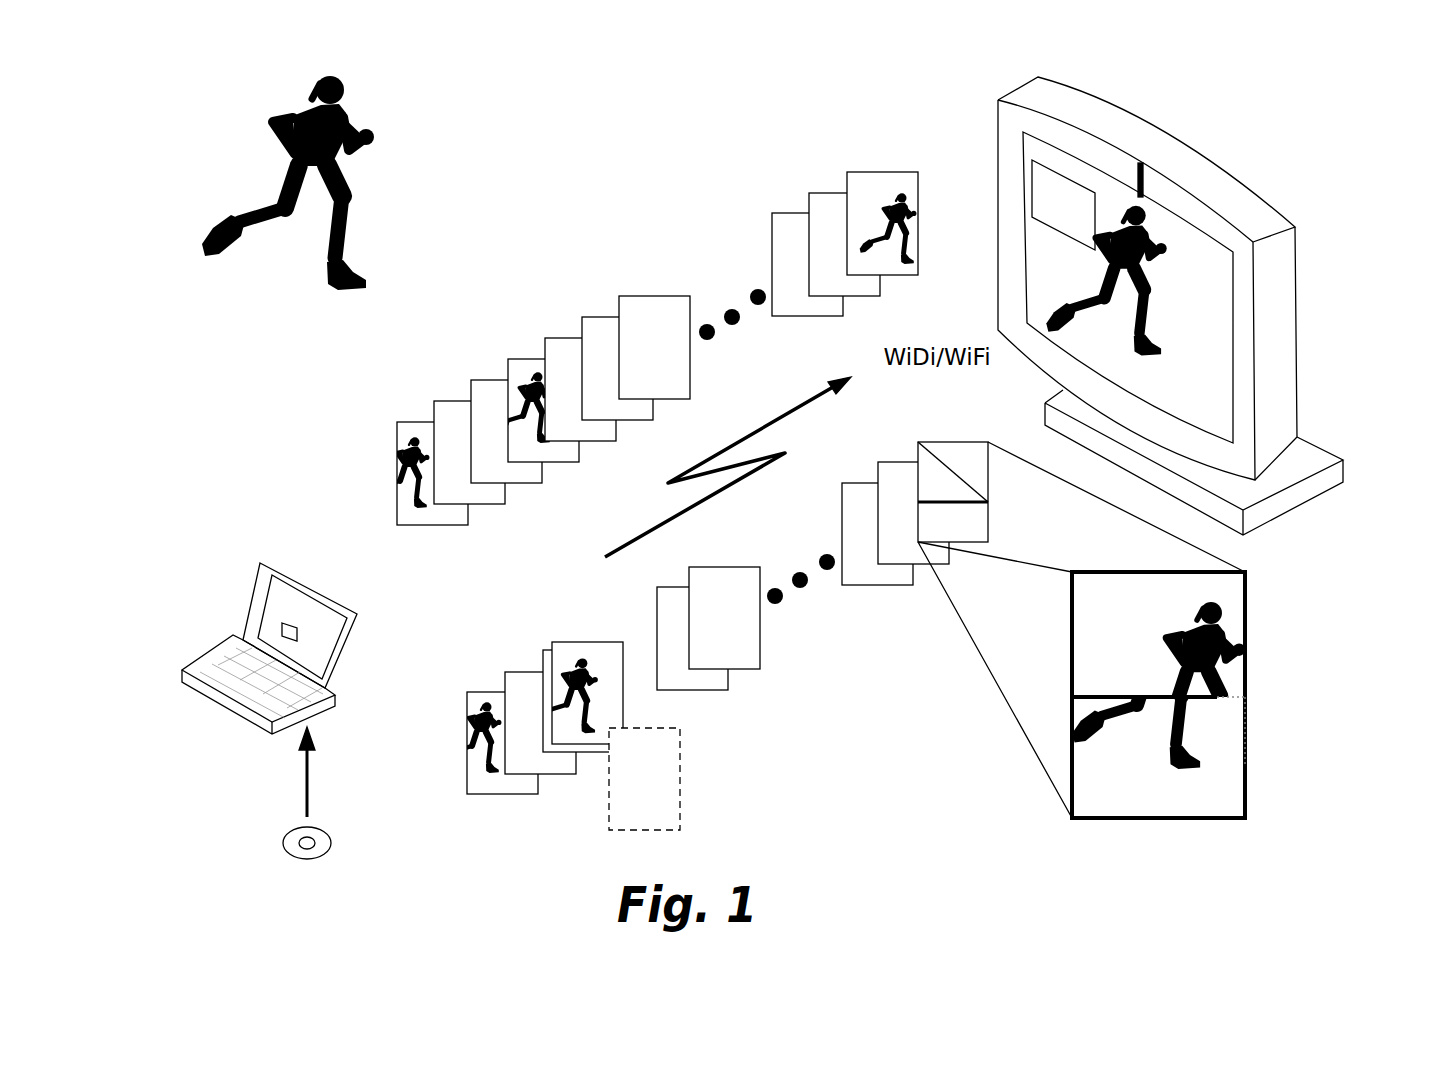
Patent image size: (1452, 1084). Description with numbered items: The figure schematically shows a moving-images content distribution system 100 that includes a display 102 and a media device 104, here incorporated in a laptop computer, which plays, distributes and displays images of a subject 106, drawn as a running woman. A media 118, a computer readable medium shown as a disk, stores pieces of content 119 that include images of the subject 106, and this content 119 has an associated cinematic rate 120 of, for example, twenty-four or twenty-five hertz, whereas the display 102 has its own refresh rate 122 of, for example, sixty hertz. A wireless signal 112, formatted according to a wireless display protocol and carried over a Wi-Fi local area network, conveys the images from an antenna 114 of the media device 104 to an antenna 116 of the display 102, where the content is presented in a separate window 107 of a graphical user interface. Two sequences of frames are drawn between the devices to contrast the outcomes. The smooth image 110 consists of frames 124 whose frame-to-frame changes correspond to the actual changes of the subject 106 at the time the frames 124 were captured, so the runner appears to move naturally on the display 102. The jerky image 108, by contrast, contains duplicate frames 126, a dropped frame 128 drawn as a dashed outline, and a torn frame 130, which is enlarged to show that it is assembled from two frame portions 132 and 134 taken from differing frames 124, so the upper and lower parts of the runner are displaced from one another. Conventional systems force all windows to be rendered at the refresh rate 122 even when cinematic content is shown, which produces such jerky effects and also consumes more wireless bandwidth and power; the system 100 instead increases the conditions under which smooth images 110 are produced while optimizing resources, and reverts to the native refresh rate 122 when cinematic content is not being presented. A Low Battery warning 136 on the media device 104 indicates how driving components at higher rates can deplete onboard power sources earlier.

The system 100 is at (659, 128).
The display 102 is at (1147, 122).
The media device 104 is at (262, 563).
The subject 106 is at (288, 201).
The window 107 is at (1030, 170).
The jerky image 108 is at (697, 646).
The smooth image 110 is at (1308, 228).
The wireless signal 112 is at (665, 522).
The antenna 114 is at (348, 590).
The antenna 116 is at (1137, 160).
The media 118 is at (244, 828).
The content 119 is at (308, 772).
The cinematic rate 120 is at (268, 451).
The refresh rate 122 is at (1327, 132).
The frames 124 is at (690, 358).
The duplicate frames 126 is at (545, 686).
The dropped frame 128 is at (712, 779).
The torn frame 130 is at (957, 442).
The frame portion 132 is at (1247, 592).
The frame portion 134 is at (1232, 820).
The Low Battery warning 136 is at (285, 626).